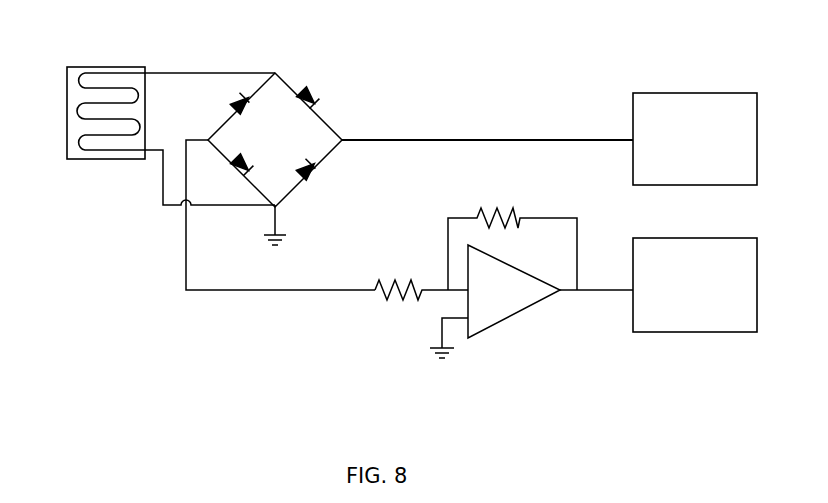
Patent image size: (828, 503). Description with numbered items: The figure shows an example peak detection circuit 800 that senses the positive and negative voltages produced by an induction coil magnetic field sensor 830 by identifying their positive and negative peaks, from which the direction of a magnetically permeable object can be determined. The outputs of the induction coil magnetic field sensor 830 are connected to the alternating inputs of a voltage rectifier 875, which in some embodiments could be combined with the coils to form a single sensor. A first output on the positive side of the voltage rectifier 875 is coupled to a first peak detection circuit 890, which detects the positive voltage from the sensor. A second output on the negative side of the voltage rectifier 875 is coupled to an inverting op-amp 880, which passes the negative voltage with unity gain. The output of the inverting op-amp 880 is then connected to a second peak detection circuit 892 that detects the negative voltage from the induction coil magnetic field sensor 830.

The peak detection circuit 800 is at (524, 55).
The induction coil magnetic field sensor 830 is at (110, 161).
The voltage rectifier 875 is at (291, 74).
The inverting op-amp 880 is at (576, 341).
The first peak detection circuit 890 is at (695, 139).
The second peak detection circuit 892 is at (695, 285).